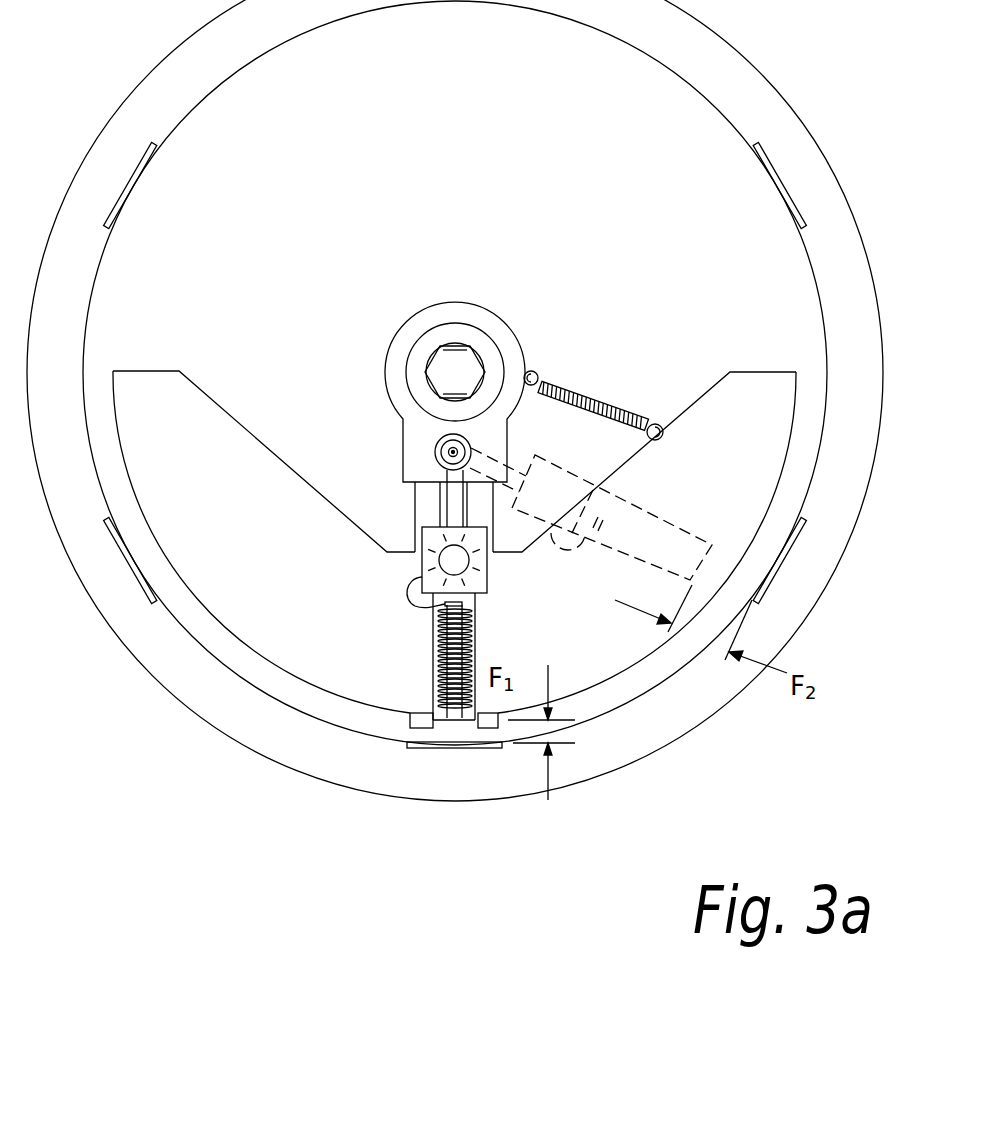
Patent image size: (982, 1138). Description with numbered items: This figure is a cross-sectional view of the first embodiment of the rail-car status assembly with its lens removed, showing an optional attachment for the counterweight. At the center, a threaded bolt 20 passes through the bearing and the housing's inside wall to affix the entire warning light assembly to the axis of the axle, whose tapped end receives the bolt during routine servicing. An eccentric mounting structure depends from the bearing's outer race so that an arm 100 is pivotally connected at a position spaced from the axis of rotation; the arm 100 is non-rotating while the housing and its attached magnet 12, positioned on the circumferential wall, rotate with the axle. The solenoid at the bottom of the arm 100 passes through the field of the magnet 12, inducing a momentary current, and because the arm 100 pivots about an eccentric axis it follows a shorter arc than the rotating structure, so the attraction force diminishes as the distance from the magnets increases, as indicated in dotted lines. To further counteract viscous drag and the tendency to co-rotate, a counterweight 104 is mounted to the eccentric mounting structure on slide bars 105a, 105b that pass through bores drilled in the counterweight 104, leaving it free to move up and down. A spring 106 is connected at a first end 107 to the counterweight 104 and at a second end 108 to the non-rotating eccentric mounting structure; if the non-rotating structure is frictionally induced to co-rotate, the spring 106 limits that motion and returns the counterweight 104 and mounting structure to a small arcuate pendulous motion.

The magnet 12 is at (783, 558).
The threaded bolt 20 is at (465, 347).
The arm 100 is at (477, 608).
The counterweight 104 is at (608, 647).
The slide bar 105a is at (485, 728).
The slide bar 105b is at (423, 730).
The spring 106 is at (578, 391).
The first end 107 is at (660, 420).
The second end 108 is at (533, 368).